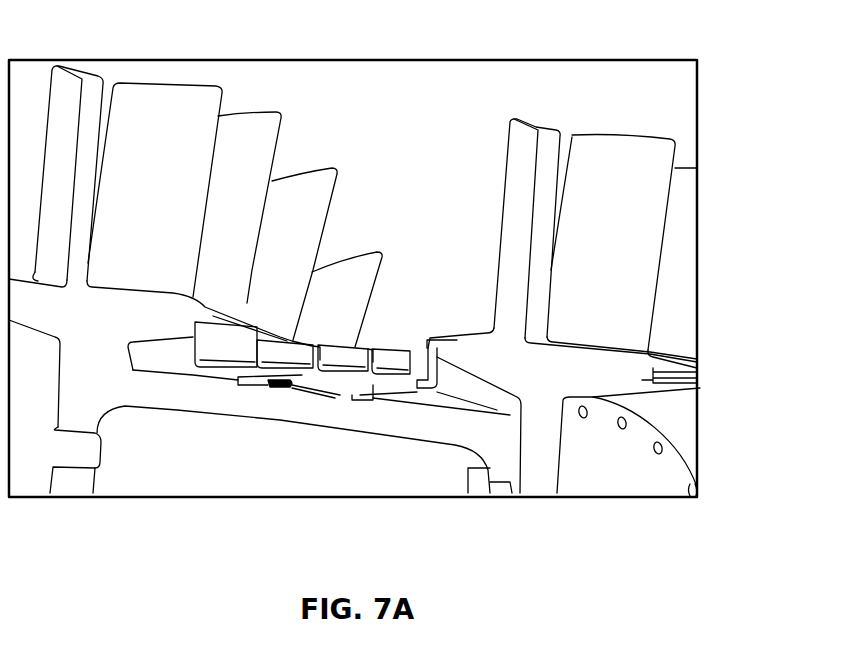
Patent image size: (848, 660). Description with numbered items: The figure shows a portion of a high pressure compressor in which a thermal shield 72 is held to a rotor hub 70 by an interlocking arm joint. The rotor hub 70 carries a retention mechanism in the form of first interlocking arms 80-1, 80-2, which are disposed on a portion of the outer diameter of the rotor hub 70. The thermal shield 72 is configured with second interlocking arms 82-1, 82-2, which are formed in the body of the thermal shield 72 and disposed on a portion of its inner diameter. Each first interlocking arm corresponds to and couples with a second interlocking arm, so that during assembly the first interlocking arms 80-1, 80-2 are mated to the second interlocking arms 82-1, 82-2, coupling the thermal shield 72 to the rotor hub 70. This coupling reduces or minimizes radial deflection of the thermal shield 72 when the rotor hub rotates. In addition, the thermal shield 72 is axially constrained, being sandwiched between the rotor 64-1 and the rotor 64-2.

The rotor 64-1 is at (137, 92).
The rotor 64-2 is at (687, 382).
The rotor hub 70 is at (655, 472).
The thermal shield 72 is at (400, 345).
The first interlocking arm 80-1 is at (238, 381).
The first interlocking arm 80-2 is at (345, 398).
The second interlocking arm 82-1 is at (300, 378).
The second interlocking arm 82-2 is at (400, 340).